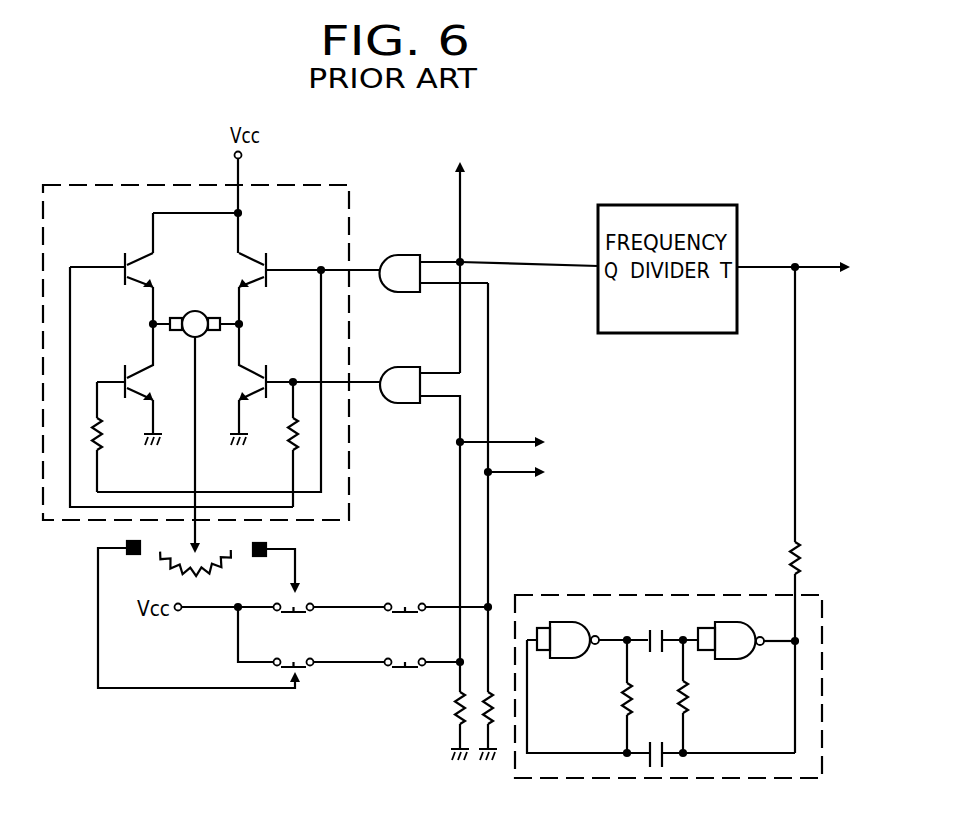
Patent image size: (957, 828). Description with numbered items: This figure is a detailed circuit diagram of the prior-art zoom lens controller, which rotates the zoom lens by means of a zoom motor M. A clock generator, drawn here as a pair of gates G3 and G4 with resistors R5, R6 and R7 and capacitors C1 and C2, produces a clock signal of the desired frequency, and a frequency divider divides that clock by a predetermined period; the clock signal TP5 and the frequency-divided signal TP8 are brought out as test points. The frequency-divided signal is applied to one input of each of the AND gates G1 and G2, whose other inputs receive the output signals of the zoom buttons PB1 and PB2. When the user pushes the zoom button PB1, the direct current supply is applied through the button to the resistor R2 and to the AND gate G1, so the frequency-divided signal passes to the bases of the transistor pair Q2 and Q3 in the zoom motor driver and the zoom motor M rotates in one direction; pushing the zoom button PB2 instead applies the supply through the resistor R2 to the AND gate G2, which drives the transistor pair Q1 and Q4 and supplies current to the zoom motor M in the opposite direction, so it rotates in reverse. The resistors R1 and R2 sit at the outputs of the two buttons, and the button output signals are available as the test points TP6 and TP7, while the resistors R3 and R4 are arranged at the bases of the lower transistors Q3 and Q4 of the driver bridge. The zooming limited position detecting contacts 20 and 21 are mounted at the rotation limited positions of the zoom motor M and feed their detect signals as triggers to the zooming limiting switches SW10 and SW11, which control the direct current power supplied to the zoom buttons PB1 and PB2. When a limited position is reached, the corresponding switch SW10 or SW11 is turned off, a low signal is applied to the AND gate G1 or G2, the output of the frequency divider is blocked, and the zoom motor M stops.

The zooming limited position detecting contact 20 is at (267, 542).
The zooming limited position detecting contact 21 is at (126, 541).
The transistor Q1 is at (123, 288).
The transistor Q2 is at (269, 288).
The transistor Q3 is at (137, 384).
The transistor Q4 is at (298, 384).
The zoom motor M is at (196, 432).
The resistor R1 is at (451, 601).
The resistor R2 is at (482, 521).
The resistor R3 is at (112, 437).
The resistor R4 is at (279, 443).
The resistor R5 is at (778, 510).
The resistor R6 is at (667, 696).
The resistor R7 is at (606, 696).
The capacitor C1 is at (671, 629).
The capacitor C2 is at (656, 744).
The AND gate G1 is at (404, 273).
The AND gate G2 is at (420, 404).
The gate G3 is at (592, 640).
The gate G4 is at (748, 640).
The zooming limiting switch SW10 is at (274, 596).
The zooming limiting switch SW11 is at (301, 651).
The zoom button PB1 is at (405, 596).
The zoom button PB2 is at (405, 651).
The clock signal TP5 is at (823, 258).
The output signal TP6 is at (523, 445).
The output signal TP7 is at (537, 475).
The frequency-divided signal TP8 is at (468, 249).